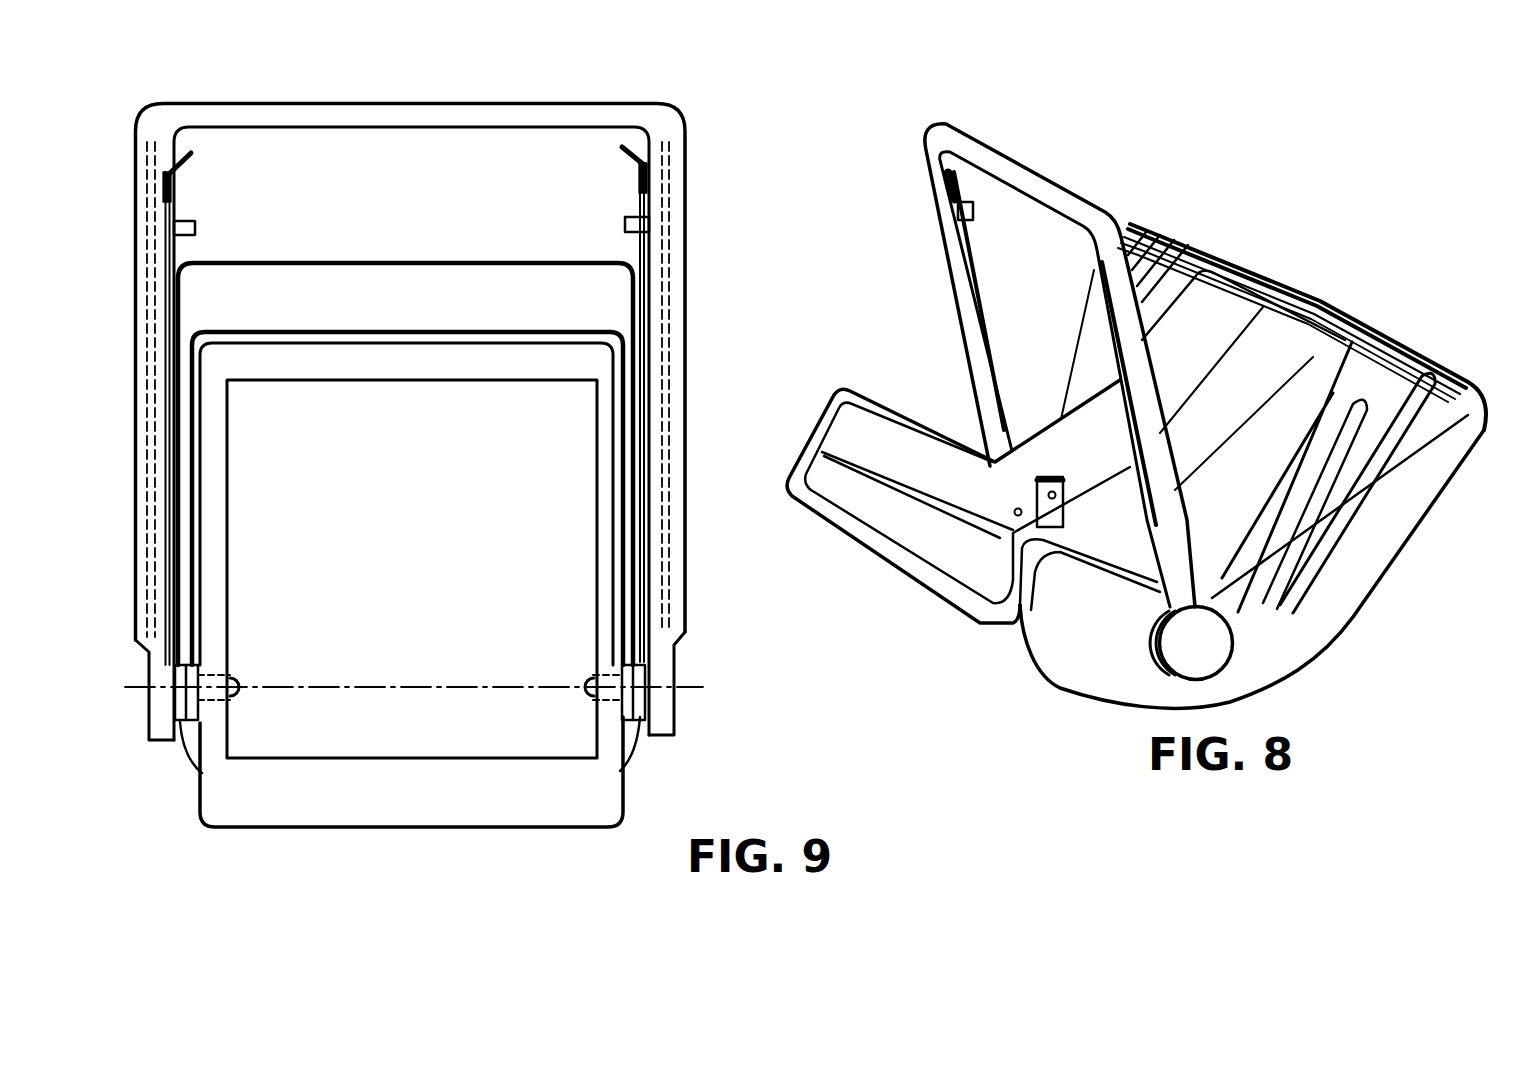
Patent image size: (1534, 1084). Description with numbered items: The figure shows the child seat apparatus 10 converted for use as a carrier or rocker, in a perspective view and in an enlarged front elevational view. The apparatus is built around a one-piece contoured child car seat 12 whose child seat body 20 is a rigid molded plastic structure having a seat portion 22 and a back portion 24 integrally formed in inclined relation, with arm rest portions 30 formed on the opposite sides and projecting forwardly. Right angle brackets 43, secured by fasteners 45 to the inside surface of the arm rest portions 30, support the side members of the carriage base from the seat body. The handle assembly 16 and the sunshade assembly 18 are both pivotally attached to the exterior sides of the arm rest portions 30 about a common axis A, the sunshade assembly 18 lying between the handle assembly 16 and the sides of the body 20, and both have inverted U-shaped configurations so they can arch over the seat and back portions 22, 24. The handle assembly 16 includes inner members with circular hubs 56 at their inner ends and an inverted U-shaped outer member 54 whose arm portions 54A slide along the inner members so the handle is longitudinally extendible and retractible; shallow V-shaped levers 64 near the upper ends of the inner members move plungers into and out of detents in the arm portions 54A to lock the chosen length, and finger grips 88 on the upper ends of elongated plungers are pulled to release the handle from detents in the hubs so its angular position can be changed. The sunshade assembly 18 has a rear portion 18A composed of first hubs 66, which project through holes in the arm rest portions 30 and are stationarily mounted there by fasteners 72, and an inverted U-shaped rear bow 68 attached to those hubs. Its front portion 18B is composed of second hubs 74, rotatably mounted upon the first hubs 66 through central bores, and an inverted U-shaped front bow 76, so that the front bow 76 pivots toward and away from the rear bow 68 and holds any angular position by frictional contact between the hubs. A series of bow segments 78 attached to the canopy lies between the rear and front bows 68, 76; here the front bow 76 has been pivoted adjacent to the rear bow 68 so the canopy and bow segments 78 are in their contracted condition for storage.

In FIG. 9, the child seat apparatus 10 is at (747, 129).
In FIG. 8, the child seat apparatus 10 is at (1363, 205).
In FIG. 9, the child car seat 12 is at (594, 831).
In FIG. 8, the child car seat 12 is at (1363, 622).
In FIG. 9, the handle assembly 16 is at (692, 94).
In FIG. 8, the handle assembly 16 is at (1095, 171).
In FIG. 9, the sunshade assembly 18 is at (497, 256).
In FIG. 8, the sunshade assembly 18 is at (1207, 227).
In FIG. 9, the rear portion 18A is at (243, 265).
In FIG. 8, the rear portion 18A is at (1466, 380).
In FIG. 9, the front portion 18B is at (299, 329).
In FIG. 8, the front portion 18B is at (1267, 497).
In FIG. 9, the child seat body 20 is at (628, 772).
In FIG. 8, the child seat body 20 is at (1037, 658).
In FIG. 9, the seat portion 22 is at (388, 829).
In FIG. 8, the seat portion 22 is at (872, 549).
In FIG. 9, the back portion 24 is at (452, 358).
In FIG. 8, the back portion 24 is at (1314, 318).
In FIG. 9, the arm rest portions 30 is at (226, 593).
In FIG. 8, the arm rest portions 30 is at (935, 430).
In FIG. 9, the right angle brackets 43 is at (233, 680).
In FIG. 8, the right angle brackets 43 is at (1058, 480).
In FIG. 9, the fasteners 45 is at (241, 696).
In FIG. 8, the fasteners 45 is at (1058, 494).
In FIG. 9, the outer member 54 is at (462, 101).
In FIG. 8, the outer member 54 is at (1014, 166).
In FIG. 9, the arm portions 54A is at (688, 410).
In FIG. 8, the arm portions 54A is at (1055, 348).
In FIG. 9, the circular hubs 56 is at (160, 732).
In FIG. 8, the circular hubs 56 is at (1229, 643).
In FIG. 9, the levers 64 is at (193, 160).
In FIG. 8, the levers 64 is at (942, 181).
In FIG. 9, the first hubs 66 is at (205, 772).
In FIG. 8, the first hubs 66 is at (1151, 655).
In FIG. 9, the rear bow 68 is at (528, 266).
In FIG. 8, the rear bow 68 is at (1427, 456).
In FIG. 8, the fasteners 72 is at (1013, 510).
In FIG. 9, the second hubs 74 is at (198, 668).
In FIG. 8, the second hubs 74 is at (1147, 628).
In FIG. 9, the front bow 76 is at (536, 346).
In FIG. 8, the front bow 76 is at (1317, 408).
In FIG. 8, the bow segments 78 is at (1403, 360).
In FIG. 9, the finger grips 88 is at (195, 228).
In FIG. 8, the finger grips 88 is at (976, 213).
In FIG. 9, the common axis A is at (427, 687).